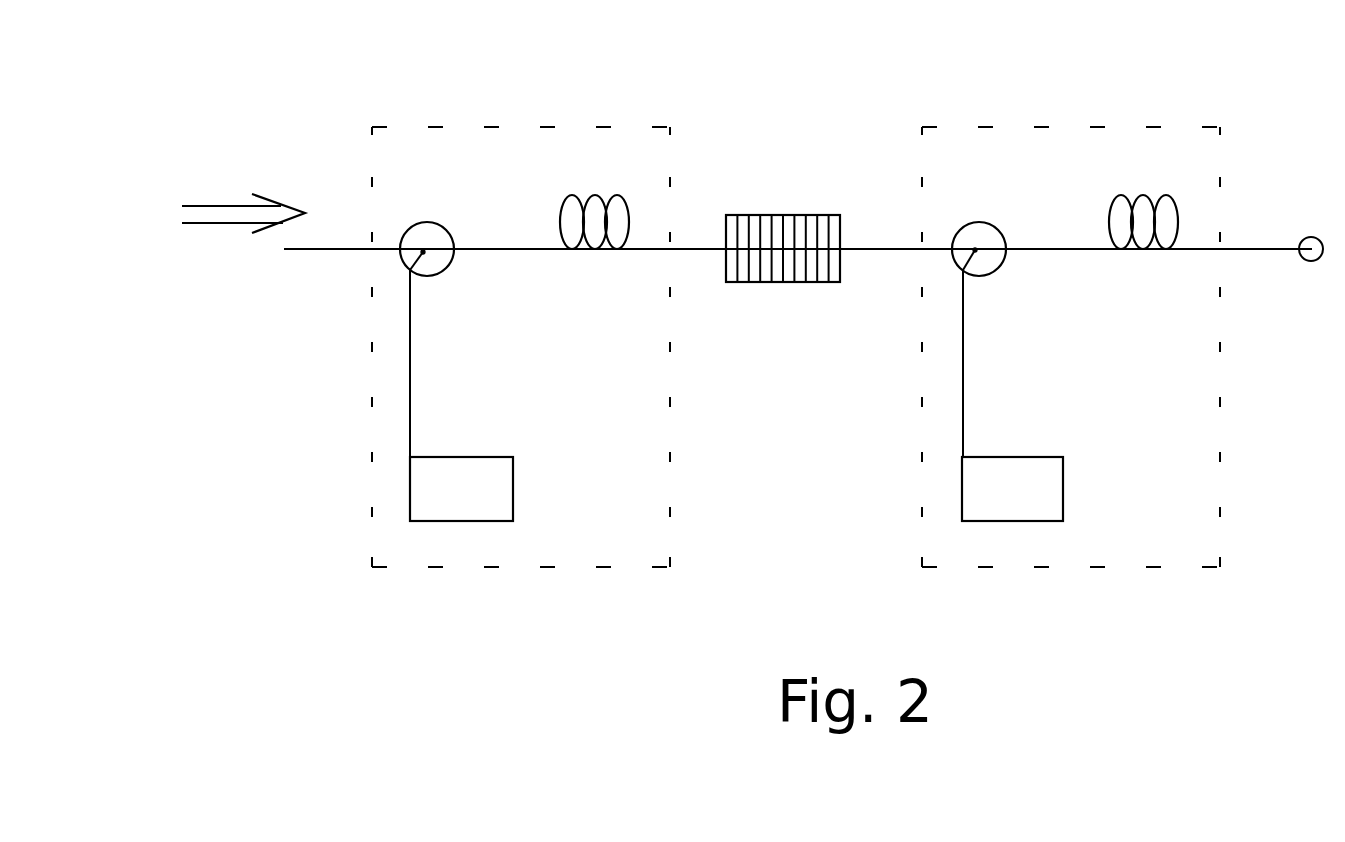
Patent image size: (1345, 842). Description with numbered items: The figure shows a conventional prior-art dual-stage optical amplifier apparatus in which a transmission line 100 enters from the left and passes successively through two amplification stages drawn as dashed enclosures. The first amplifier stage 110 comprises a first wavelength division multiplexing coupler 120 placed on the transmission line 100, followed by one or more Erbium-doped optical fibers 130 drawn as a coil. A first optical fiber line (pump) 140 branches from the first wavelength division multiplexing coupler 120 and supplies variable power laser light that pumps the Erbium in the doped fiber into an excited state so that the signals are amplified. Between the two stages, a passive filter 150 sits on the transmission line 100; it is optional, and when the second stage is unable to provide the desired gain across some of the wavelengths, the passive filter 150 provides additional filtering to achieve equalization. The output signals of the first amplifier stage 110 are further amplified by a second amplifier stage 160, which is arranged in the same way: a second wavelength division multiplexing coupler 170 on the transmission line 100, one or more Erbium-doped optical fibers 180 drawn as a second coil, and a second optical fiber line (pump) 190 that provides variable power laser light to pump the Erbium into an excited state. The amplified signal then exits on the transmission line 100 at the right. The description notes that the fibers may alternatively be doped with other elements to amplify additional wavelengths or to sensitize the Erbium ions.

The transmission line 100 is at (345, 249).
The first amplifier stage 110 is at (670, 127).
The first wavelength division multiplexing coupler 120 is at (432, 227).
The Erbium-doped optical fibers 130 is at (593, 200).
The first optical fiber line (pump) 140 is at (461, 395).
The passive filter 150 is at (809, 161).
The second amplifier stage 160 is at (1195, 118).
The second wavelength division multiplexing coupler 170 is at (975, 223).
The Erbium-doped optical fibers 180 is at (1133, 197).
The second optical fiber line (pump) 190 is at (1012, 395).